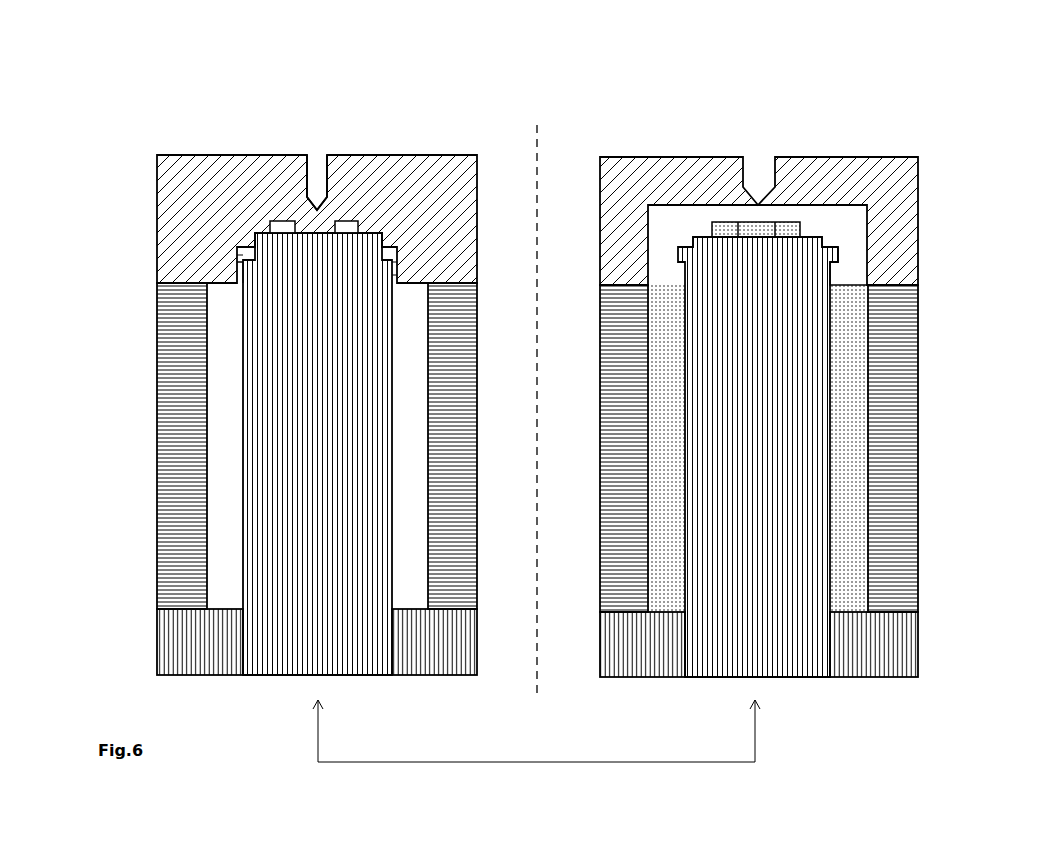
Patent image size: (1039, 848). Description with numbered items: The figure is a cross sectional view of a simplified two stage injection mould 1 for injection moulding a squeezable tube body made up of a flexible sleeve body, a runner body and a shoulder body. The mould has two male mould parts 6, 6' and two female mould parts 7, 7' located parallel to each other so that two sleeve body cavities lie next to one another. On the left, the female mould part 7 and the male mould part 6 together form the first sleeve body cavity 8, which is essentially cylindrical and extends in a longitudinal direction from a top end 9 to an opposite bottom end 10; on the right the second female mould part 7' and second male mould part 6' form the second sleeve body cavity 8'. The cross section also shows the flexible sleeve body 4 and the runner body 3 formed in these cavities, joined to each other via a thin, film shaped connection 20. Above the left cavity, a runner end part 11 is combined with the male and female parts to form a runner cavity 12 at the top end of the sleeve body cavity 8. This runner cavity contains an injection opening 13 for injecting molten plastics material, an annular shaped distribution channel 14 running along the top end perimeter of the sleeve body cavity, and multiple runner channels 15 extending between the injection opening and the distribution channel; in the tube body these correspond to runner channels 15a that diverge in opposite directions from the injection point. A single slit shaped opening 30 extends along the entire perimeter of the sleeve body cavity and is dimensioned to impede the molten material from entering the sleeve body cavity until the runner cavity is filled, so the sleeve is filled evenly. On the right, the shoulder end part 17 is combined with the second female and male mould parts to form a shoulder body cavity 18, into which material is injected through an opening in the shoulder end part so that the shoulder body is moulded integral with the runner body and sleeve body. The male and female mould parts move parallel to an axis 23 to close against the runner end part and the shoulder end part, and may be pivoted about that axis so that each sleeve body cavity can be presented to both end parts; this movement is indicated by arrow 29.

The two stage injection mould 1 is at (796, 353).
The runner body cavity 3 is at (676, 260).
The flexible sleeve body 4 is at (852, 347).
The male mould part 6 is at (280, 454).
The second male mould part 6' is at (791, 457).
The female mould part 7 is at (276, 446).
The second female mould part 7' is at (795, 448).
The sleeve body cavity 8 is at (160, 418).
The second sleeve body cavity 8' is at (819, 448).
The top end 9 is at (232, 312).
The bottom end 10 is at (232, 568).
The runner end part 11 is at (180, 202).
The runner cavity 12 is at (244, 251).
The injection opening 13 is at (316, 194).
The annular shaped distribution channel 14 is at (399, 252).
The runner channels 15 is at (348, 222).
The runner channels 15a is at (795, 232).
The shoulder end part 17 is at (900, 185).
The shoulder body cavity 18 is at (847, 253).
The film shaped connection 20 is at (838, 275).
The axis 23 is at (538, 148).
The arrow 29 is at (670, 762).
The opening 30 is at (237, 272).